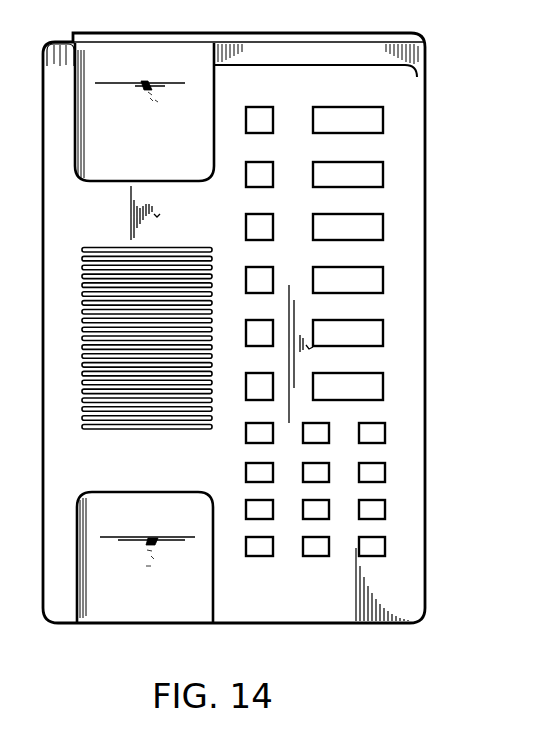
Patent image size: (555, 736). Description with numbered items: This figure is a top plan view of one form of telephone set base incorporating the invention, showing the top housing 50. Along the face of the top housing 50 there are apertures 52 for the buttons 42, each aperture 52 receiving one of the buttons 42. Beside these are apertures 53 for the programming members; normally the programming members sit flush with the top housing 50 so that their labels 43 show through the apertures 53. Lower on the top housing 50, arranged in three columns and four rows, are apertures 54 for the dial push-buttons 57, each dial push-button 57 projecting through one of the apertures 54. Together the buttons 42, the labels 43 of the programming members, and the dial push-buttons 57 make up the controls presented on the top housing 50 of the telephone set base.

The top housing 50 is at (400, 126).
The buttons 42 is at (262, 122).
The apertures 52 is at (264, 120).
The labels 43 is at (342, 118).
The apertures 53 is at (363, 107).
The apertures 54 is at (385, 433).
The dial push-buttons 57 is at (373, 473).